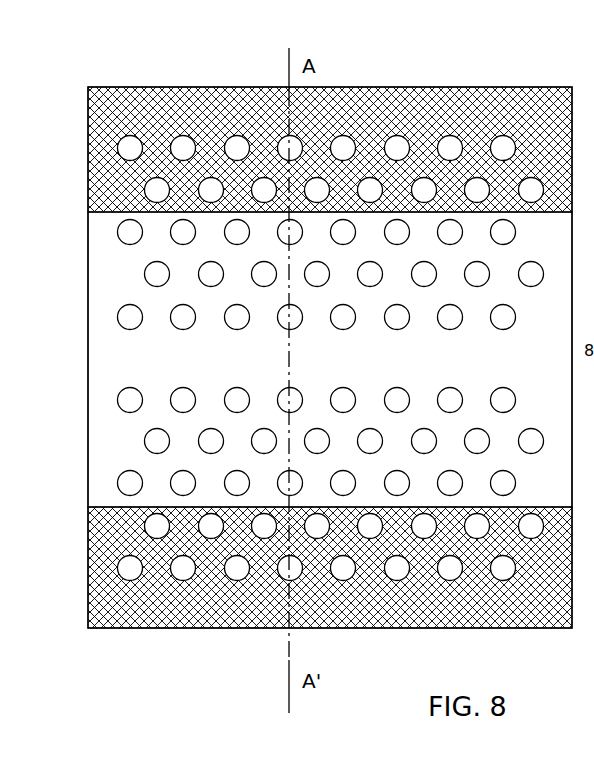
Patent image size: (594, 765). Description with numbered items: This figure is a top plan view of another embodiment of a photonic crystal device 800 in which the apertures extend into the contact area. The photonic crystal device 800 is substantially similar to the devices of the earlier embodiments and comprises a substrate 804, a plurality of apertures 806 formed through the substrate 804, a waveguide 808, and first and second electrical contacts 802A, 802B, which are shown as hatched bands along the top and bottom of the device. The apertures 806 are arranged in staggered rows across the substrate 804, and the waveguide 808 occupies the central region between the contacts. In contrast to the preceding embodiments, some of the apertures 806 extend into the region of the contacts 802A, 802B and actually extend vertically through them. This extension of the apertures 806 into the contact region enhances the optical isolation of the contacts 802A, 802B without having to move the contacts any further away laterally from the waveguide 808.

The photonic crystal device 800 is at (216, 78).
The first electrical contact 802A is at (445, 102).
The second electrical contact 802B is at (407, 613).
The substrate 804 is at (102, 237).
The apertures 806 is at (127, 568).
The waveguide 808 is at (408, 367).